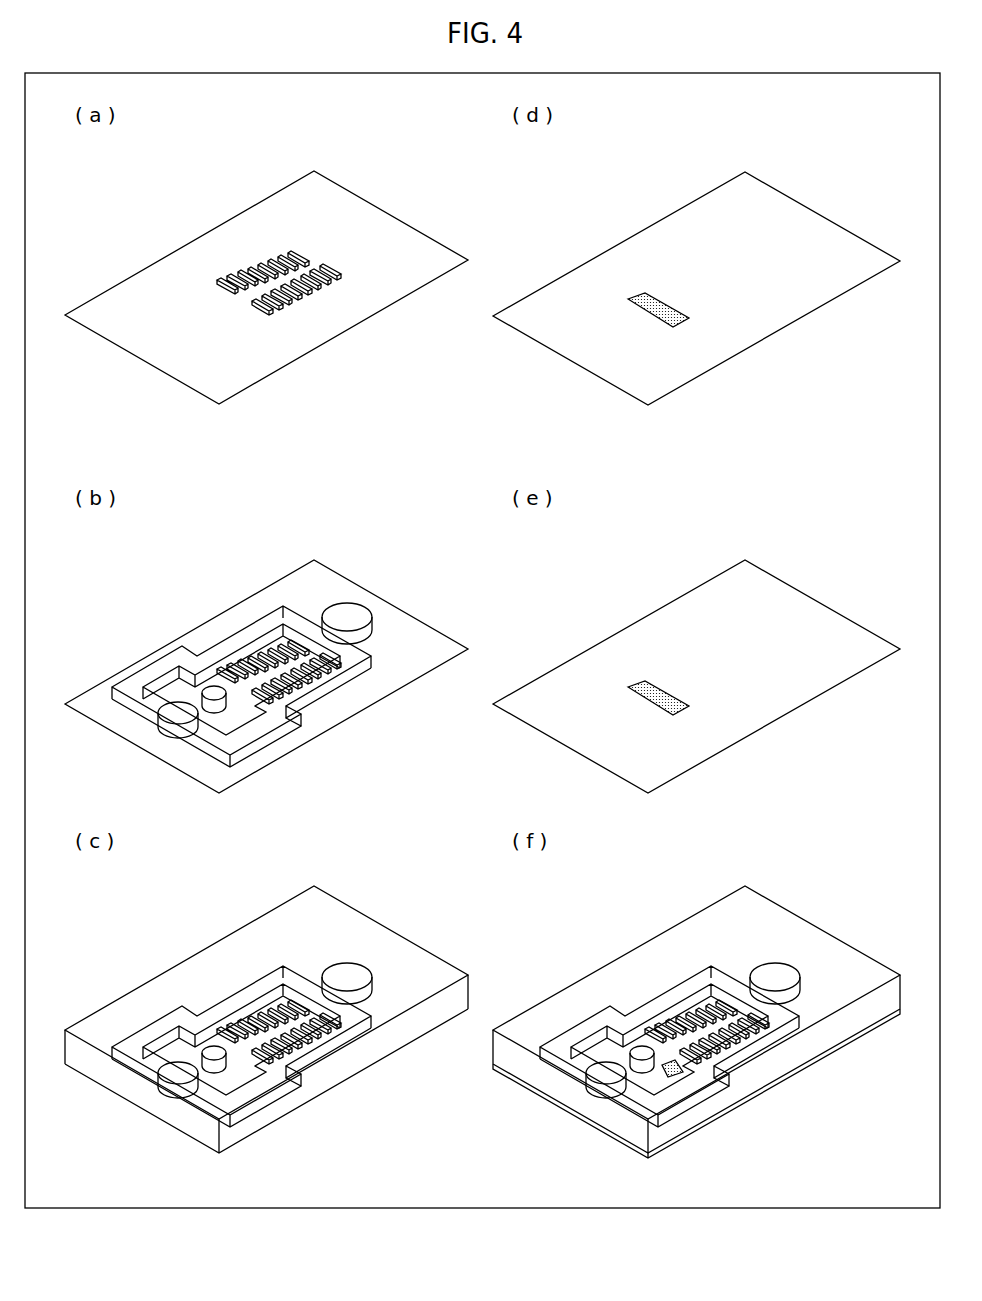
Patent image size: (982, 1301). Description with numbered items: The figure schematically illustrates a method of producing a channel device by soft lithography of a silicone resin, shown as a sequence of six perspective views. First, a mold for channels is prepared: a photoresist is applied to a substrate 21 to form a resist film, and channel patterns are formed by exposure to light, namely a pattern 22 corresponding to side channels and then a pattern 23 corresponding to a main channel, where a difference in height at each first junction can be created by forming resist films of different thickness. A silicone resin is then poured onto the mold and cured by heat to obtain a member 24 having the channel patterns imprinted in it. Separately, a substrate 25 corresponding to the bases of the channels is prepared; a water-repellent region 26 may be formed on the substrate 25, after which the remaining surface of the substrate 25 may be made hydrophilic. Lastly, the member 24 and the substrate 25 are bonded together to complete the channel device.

The substrate 21 is at (125, 283).
The pattern corresponding to side channels 22 is at (348, 272).
The pattern corresponding to a main channel 23 is at (365, 602).
The member 24 is at (377, 918).
The substrate 25 is at (552, 282).
The water-repellent region 26 is at (665, 327).